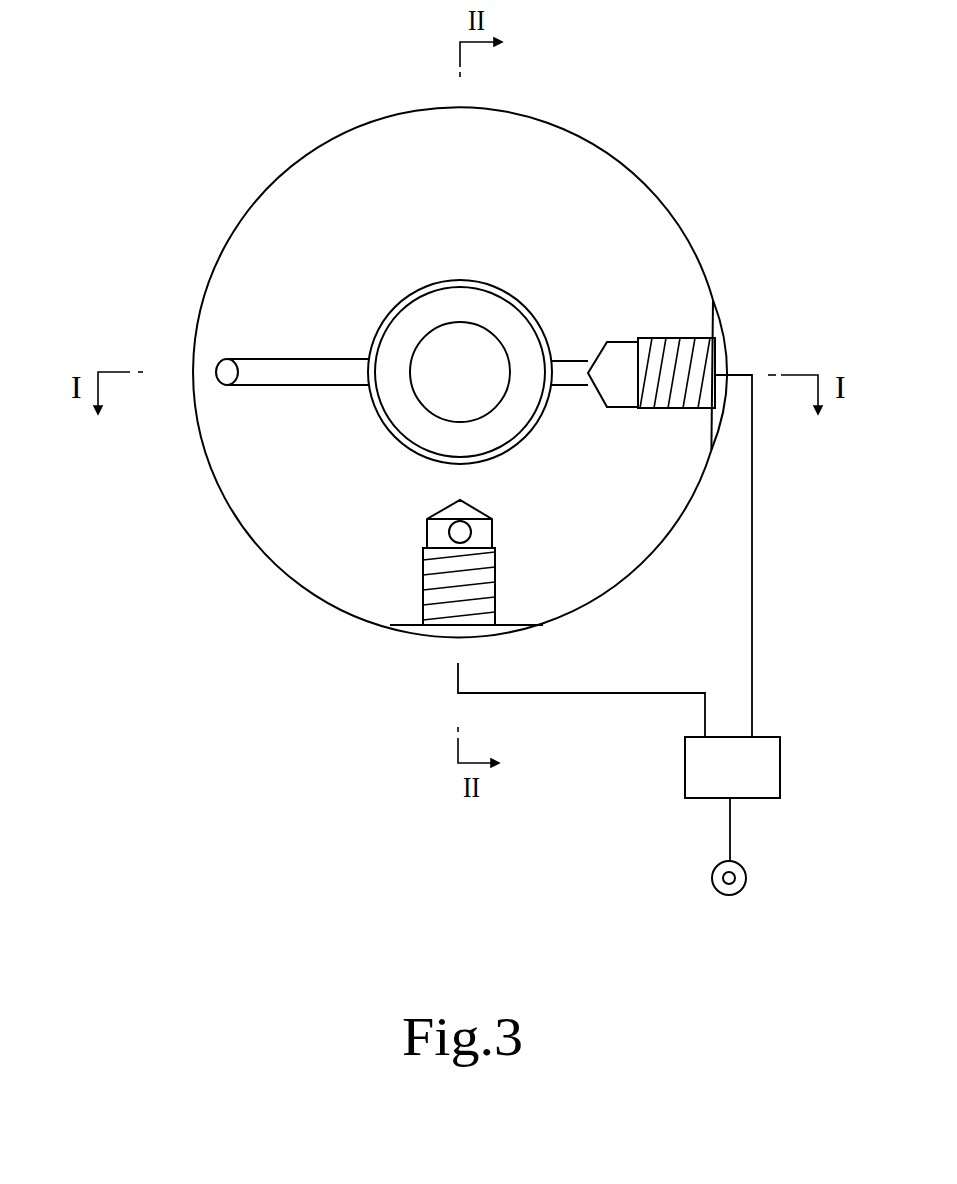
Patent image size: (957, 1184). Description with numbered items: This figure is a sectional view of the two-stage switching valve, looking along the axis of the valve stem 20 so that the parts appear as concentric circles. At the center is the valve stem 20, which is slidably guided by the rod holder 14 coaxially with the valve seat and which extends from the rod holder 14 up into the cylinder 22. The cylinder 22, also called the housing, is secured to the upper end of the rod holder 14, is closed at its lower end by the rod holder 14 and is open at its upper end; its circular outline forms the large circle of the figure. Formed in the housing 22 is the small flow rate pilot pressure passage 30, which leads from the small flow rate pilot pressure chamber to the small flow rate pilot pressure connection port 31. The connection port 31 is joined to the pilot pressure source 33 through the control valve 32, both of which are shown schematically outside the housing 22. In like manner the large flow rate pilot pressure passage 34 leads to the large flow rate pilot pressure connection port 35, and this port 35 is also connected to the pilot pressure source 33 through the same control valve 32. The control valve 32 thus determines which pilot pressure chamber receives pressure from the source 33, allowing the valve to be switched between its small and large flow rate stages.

The rod holder 14 is at (505, 418).
The valve stem 20 is at (438, 403).
The cylinder 22 is at (660, 230).
The small flow rate pilot pressure passage 30 is at (568, 371).
The small flow rate pilot pressure connection port 31 is at (705, 357).
The control valve 32 is at (782, 777).
The pilot pressure source 33 is at (747, 875).
The large flow rate pilot pressure passage 34 is at (449, 534).
The large flow rate pilot pressure connection port 35 is at (428, 580).